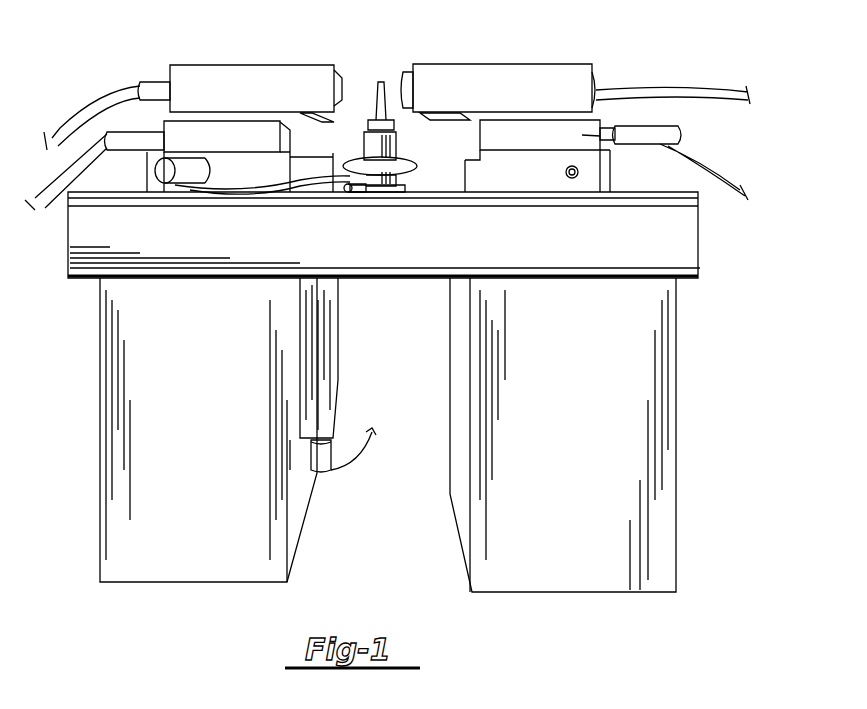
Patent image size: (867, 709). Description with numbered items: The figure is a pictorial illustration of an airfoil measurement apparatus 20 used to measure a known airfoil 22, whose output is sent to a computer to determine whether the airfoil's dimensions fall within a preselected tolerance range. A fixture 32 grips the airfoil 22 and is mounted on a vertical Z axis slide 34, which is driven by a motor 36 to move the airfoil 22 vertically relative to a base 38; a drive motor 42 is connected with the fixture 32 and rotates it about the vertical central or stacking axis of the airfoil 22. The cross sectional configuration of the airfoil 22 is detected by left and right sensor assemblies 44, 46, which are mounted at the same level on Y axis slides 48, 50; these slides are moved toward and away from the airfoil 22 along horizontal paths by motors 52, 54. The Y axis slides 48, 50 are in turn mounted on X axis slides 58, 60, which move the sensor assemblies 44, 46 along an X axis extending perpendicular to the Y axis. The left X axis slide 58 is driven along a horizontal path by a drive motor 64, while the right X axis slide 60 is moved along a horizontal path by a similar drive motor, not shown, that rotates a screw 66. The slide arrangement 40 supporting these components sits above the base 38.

The airfoil measurement apparatus 20 is at (609, 50).
The airfoil 22 is at (386, 69).
The fixture 32 is at (396, 142).
The Z axis slide 34 is at (318, 355).
The motor 36 is at (328, 468).
The base 38 is at (125, 452).
The shelf 40 is at (384, 235).
The drive motor 42 is at (354, 190).
The left sensor assembly 44 is at (270, 88).
The right sensor assembly 46 is at (512, 80).
The Y axis slide 48 is at (214, 112).
The Y axis slide 50 is at (532, 112).
The motor 52 is at (105, 146).
The motor 54 is at (682, 131).
The left X axis slide 58 is at (150, 148).
The right X axis slide 60 is at (585, 136).
The drive motor 64 is at (160, 170).
The screw 66 is at (578, 178).